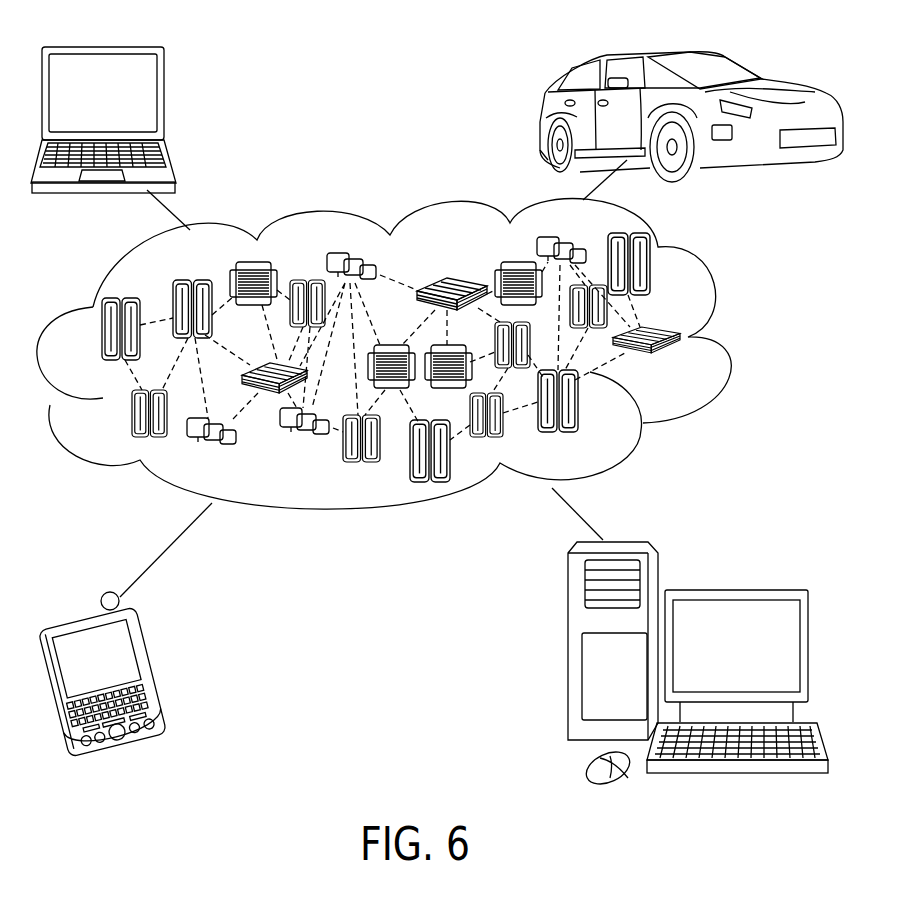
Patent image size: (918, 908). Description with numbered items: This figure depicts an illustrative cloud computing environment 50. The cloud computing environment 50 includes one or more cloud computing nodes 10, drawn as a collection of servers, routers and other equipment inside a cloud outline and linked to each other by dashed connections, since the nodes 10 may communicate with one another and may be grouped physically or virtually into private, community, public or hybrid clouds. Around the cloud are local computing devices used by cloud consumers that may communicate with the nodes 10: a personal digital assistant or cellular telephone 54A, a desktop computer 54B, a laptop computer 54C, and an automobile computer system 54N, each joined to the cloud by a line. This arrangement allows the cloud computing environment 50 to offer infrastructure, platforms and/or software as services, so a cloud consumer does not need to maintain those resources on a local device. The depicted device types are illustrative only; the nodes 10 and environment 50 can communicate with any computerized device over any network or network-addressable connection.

The cloud computing nodes 10 is at (700, 370).
The cloud computing environment 50 is at (733, 340).
The personal digital assistant or cellular telephone 54A is at (153, 672).
The desktop computer 54B is at (733, 590).
The laptop computer 54C is at (163, 96).
The automobile computer system 54N is at (542, 112).